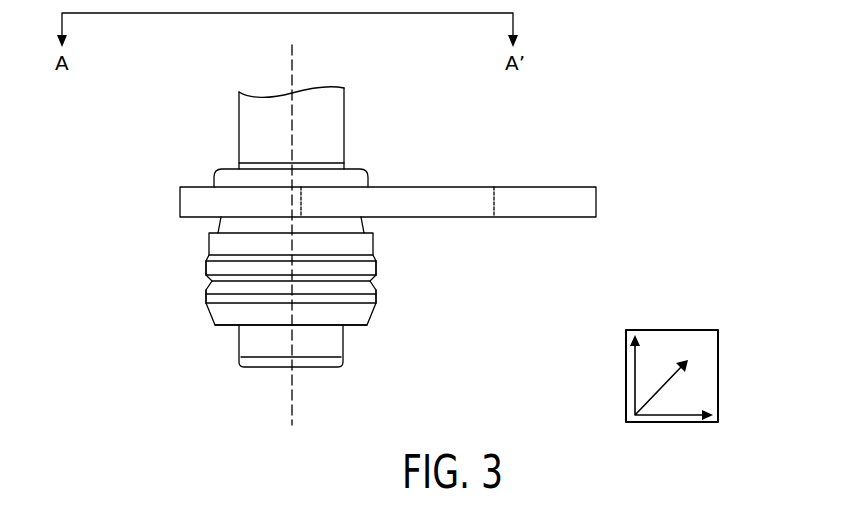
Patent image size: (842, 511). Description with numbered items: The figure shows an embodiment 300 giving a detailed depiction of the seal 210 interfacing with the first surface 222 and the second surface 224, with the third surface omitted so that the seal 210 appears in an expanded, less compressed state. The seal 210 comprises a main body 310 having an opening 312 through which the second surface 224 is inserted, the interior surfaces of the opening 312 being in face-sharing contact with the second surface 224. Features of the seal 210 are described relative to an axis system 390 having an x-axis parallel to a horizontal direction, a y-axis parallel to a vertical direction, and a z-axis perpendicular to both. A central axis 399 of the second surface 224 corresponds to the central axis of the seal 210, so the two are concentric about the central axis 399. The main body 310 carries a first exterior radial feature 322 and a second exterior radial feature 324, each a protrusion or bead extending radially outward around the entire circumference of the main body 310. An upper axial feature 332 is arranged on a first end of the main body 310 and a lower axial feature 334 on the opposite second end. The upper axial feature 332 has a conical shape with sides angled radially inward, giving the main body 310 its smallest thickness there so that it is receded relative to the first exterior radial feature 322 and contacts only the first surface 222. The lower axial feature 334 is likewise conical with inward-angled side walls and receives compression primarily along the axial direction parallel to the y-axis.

The embodiment 300 is at (627, 85).
The seal 210 is at (266, 326).
The first surface 222 is at (538, 187).
The second surface 224 is at (344, 120).
The main body 310 is at (213, 307).
The opening 312 is at (304, 334).
The first exterior radial feature 322 is at (377, 265).
The second exterior radial feature 324 is at (377, 297).
The upper axial feature 332 is at (238, 221).
The lower axial feature 334 is at (355, 327).
The axis system 390 is at (718, 350).
The central axis 399 is at (292, 403).